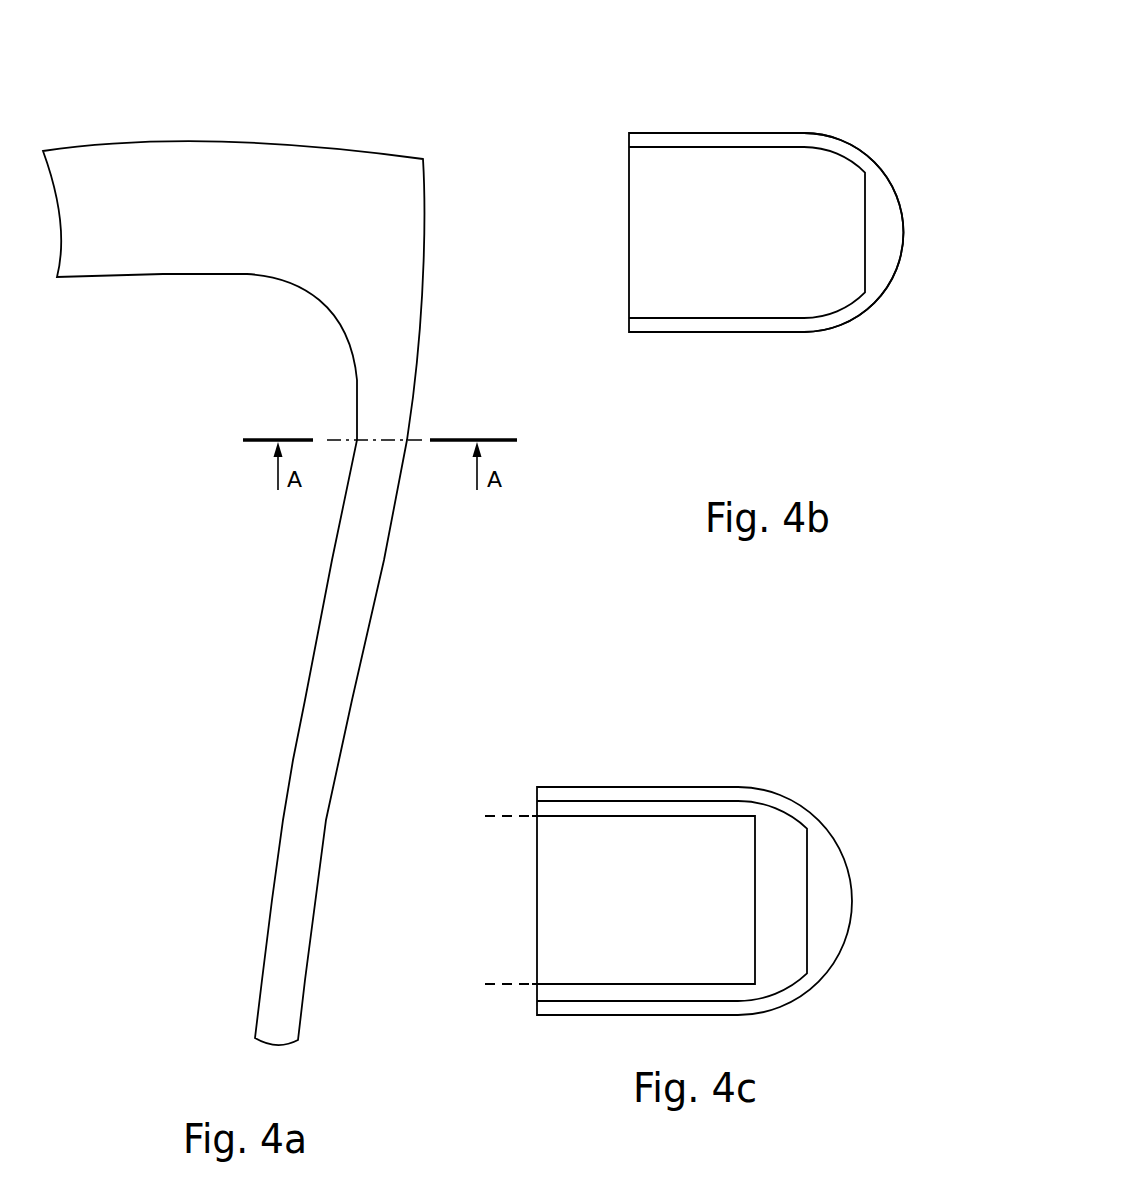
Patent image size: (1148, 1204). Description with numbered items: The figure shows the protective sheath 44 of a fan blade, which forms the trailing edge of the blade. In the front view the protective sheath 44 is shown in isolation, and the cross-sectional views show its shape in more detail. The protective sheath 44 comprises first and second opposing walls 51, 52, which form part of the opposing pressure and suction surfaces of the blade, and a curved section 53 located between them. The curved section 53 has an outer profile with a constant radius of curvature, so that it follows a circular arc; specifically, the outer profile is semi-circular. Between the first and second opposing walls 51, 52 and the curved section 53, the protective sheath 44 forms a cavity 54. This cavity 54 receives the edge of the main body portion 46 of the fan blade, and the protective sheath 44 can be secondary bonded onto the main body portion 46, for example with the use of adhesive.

In FIG. 4A, the protective sheath 44 is at (302, 233).
In FIG. 4B, the protective sheath 44 is at (702, 372).
In FIG. 4C, the protective sheath 44 is at (802, 772).
In FIG. 4C, the main body portion 46 is at (668, 908).
In FIG. 4B, the first wall 51 is at (765, 133).
In FIG. 4B, the second wall 52 is at (767, 333).
In FIG. 4B, the curved section 53 is at (902, 233).
In FIG. 4B, the cavity 54 is at (812, 243).